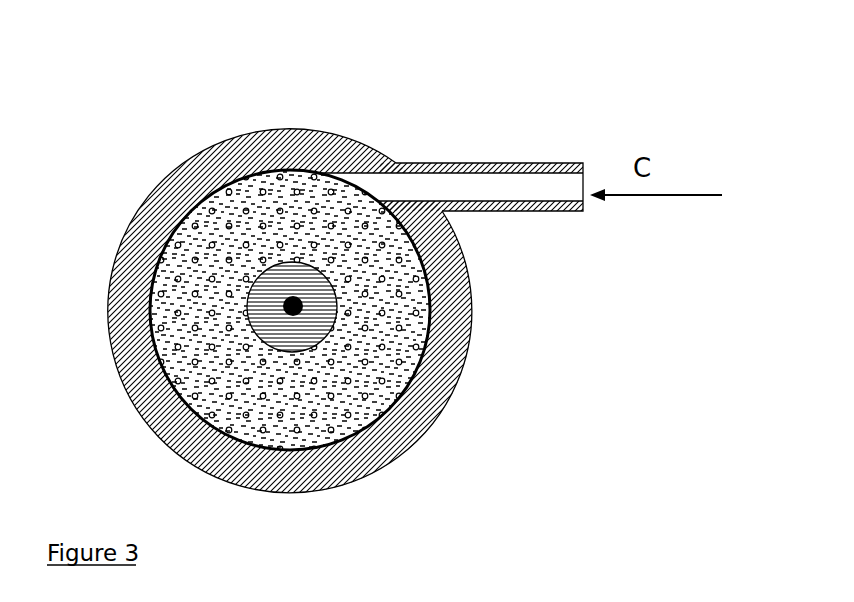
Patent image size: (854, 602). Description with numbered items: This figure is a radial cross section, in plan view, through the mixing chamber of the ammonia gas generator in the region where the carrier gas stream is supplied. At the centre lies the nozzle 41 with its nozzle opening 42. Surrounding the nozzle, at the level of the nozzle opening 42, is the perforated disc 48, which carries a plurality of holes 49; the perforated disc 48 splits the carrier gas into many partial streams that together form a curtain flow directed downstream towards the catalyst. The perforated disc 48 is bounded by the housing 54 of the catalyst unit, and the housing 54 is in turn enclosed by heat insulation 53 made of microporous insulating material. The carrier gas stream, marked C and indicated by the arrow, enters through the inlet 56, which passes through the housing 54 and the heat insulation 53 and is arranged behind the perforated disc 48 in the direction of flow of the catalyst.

The nozzle 41 is at (337, 308).
The nozzle opening 42 is at (330, 338).
The perforated disc 48 is at (273, 217).
The holes 49 is at (335, 237).
The heat insulation 53 is at (110, 290).
The housing 54 is at (153, 232).
The inlet 56 is at (452, 192).